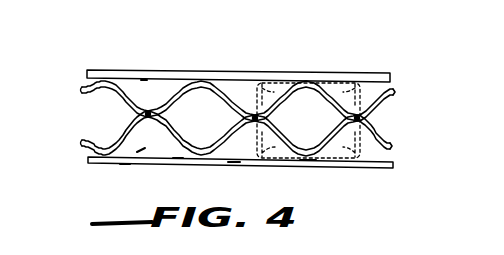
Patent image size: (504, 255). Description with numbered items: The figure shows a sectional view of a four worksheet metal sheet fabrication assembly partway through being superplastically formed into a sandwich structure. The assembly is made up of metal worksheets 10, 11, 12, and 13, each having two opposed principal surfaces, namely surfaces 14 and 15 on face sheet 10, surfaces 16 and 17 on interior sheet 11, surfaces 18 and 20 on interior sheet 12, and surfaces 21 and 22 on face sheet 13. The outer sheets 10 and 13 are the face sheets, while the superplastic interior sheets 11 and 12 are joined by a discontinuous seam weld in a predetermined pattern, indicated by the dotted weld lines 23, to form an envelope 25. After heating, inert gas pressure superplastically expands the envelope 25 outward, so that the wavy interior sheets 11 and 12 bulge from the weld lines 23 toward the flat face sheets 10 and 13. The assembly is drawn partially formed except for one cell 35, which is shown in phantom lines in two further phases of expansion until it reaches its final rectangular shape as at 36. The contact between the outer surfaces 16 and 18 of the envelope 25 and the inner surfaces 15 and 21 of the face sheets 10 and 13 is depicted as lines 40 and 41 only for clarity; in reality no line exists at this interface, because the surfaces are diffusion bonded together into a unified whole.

The face sheet 10 is at (395, 164).
The interior sheet 11 is at (392, 146).
The interior sheet 12 is at (396, 93).
The face sheet 13 is at (380, 73).
The principal surface 14 is at (234, 165).
The principal surface 15 is at (125, 164).
The principal surface 16 is at (178, 160).
The principal surface 17 is at (137, 148).
The principal surface 18 is at (250, 80).
The principal surface 20 is at (213, 90).
The principal surface 21 is at (144, 80).
The principal surface 22 is at (270, 72).
The seam weld line 23 is at (156, 113).
The envelope 25 is at (122, 113).
The cell 35 is at (341, 59).
The final rectangular shape 36 is at (378, 168).
The interface line 40 is at (308, 160).
The interface line 41 is at (308, 83).